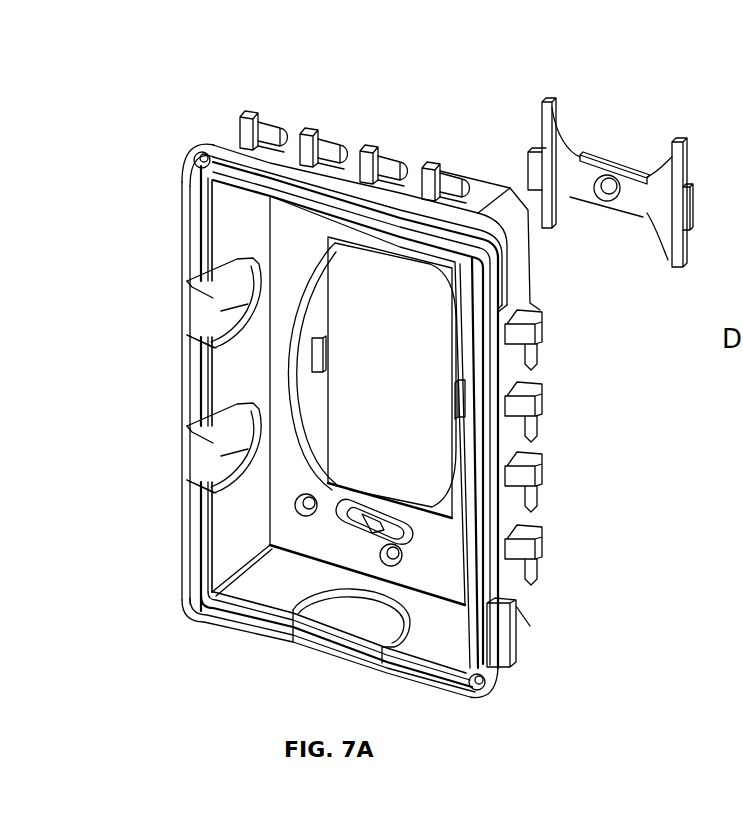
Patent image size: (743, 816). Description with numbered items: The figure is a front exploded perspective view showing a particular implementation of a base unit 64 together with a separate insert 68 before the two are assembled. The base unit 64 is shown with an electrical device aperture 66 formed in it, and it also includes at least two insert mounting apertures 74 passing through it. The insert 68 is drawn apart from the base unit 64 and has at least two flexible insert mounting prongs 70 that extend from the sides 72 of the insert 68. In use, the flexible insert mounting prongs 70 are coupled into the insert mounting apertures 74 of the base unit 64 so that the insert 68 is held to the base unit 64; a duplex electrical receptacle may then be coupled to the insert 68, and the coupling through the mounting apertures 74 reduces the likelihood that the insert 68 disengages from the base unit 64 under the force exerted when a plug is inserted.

The base unit 64 is at (293, 137).
The electrical device aperture 66 is at (410, 371).
The insert 68 is at (623, 170).
The flexible insert mounting prongs 70 is at (672, 213).
The sides of the insert 72 is at (678, 160).
The insert mounting apertures 74 is at (312, 360).